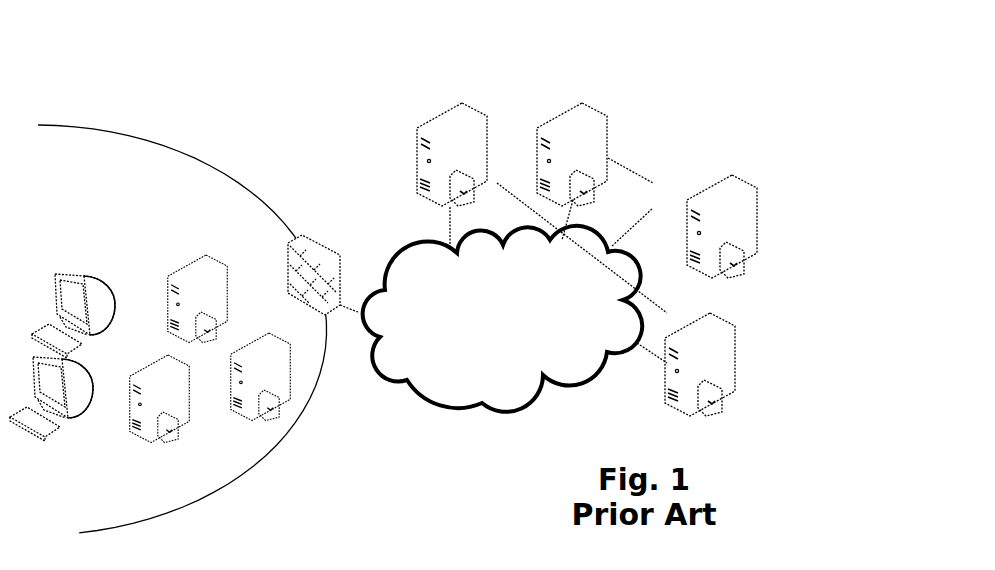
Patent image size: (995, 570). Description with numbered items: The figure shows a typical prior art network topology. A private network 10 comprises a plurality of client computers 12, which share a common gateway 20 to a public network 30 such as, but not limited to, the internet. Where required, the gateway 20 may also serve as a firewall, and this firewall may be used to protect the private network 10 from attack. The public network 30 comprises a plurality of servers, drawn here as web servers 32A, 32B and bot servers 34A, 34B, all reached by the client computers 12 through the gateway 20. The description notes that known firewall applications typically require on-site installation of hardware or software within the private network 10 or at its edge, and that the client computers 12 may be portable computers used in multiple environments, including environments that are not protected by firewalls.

The private network 10 is at (277, 443).
The client computers 12 is at (150, 325).
The gateway 20 is at (310, 237).
The public network 30 is at (483, 395).
The web server 32A is at (435, 122).
The web server 32B is at (567, 123).
The bot server 34A is at (742, 213).
The bot server 34B is at (714, 358).